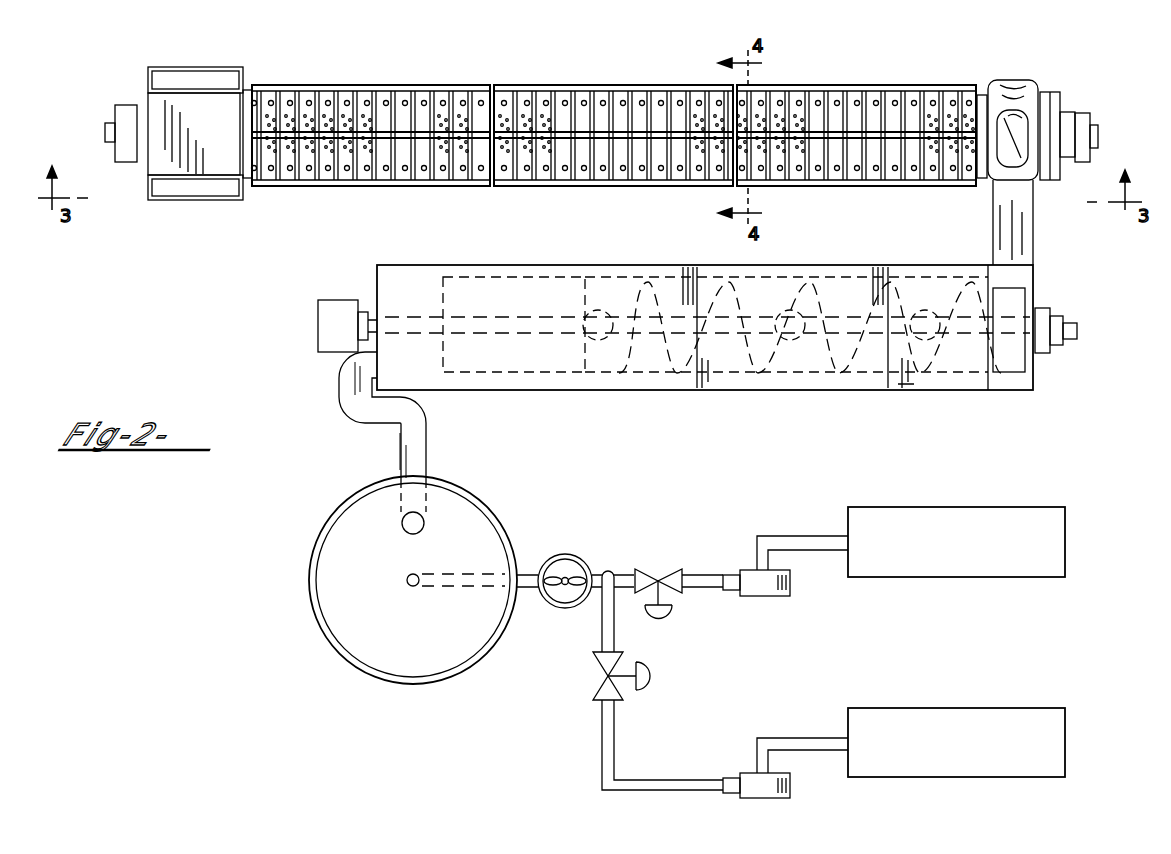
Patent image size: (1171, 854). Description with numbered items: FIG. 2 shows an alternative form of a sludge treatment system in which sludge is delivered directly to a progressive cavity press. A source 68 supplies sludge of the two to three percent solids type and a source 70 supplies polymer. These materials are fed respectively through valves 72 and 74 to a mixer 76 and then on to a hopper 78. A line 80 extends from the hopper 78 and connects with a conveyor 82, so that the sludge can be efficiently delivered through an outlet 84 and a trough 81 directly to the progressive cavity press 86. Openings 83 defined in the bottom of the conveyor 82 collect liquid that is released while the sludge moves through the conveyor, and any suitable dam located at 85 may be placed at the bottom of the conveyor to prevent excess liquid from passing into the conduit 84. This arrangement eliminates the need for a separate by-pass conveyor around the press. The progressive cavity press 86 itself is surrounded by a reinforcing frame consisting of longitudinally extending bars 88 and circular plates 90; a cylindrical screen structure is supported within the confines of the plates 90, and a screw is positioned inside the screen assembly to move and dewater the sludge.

The source for sludge 68 is at (1047, 552).
The source for polymer 70 is at (1047, 752).
The valve 72 is at (660, 566).
The valve 74 is at (595, 668).
The mixer 76 is at (582, 555).
The hopper 78 is at (328, 618).
The line 80 is at (413, 445).
The trough 81 is at (1020, 243).
The conveyor 82 is at (655, 380).
The openings 83 is at (797, 340).
The outlet 84 is at (1033, 356).
The dam 85 is at (985, 363).
The progressive cavity press 86 is at (532, 187).
The longitudinally extending bars 88 is at (342, 102).
The circular plates 90 is at (557, 102).